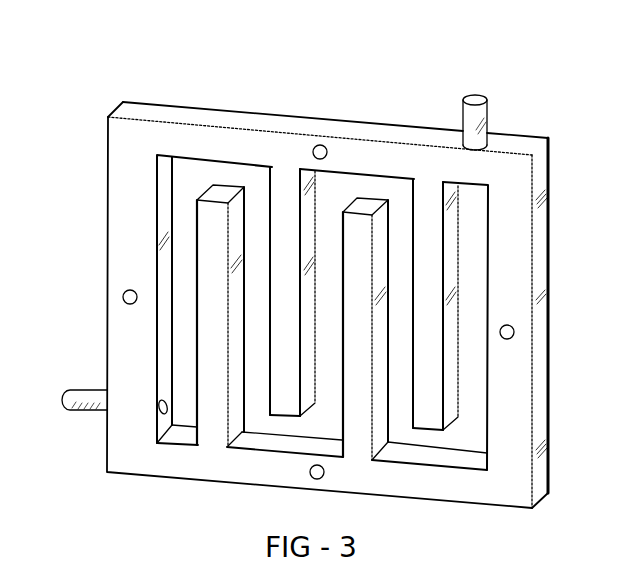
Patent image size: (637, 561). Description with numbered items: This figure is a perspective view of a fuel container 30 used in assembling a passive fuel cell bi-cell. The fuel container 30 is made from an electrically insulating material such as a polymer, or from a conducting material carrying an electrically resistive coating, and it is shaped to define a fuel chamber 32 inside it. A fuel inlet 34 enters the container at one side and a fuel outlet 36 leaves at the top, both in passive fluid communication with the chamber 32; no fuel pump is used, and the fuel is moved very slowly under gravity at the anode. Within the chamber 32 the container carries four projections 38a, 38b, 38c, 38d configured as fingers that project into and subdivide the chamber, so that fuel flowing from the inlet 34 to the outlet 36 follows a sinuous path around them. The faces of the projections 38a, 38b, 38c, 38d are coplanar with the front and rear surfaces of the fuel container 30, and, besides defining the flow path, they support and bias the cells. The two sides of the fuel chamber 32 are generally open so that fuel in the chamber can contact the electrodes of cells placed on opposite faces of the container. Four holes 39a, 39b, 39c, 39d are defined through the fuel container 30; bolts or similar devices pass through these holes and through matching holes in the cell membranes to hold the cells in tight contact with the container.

The fuel container 30 is at (105, 111).
The fuel chamber 32 is at (322, 312).
The fuel inlet 34 is at (80, 411).
The fuel outlet 36 is at (478, 112).
The projection 38a is at (213, 432).
The projection 38b is at (285, 400).
The projection 38c is at (357, 438).
The projection 38d is at (428, 413).
The hole 39a is at (323, 146).
The hole 39b is at (514, 331).
The hole 39c is at (313, 480).
The hole 39d is at (124, 293).